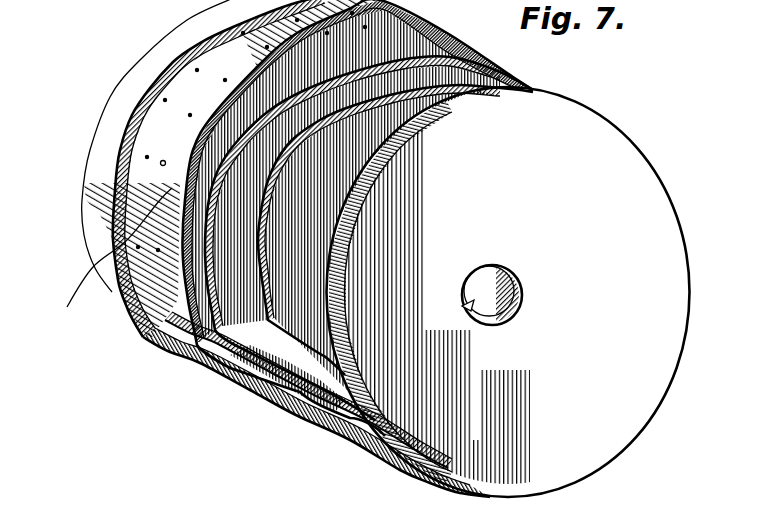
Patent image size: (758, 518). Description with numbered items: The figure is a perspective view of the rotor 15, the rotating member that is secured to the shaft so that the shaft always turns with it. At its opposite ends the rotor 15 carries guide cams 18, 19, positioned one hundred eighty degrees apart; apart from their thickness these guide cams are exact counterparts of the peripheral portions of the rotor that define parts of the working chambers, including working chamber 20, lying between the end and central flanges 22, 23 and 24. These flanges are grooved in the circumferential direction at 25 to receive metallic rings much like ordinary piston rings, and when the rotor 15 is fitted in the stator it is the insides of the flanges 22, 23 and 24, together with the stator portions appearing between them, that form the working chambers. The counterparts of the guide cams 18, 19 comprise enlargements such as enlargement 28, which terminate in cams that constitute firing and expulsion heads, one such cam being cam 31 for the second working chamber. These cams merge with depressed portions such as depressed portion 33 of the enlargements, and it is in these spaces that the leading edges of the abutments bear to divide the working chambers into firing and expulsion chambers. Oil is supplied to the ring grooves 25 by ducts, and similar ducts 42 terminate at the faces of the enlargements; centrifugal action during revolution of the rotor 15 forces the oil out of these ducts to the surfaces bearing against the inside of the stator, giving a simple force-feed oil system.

The rotor 15 is at (279, 391).
The guide cam 18 is at (583, 182).
The guide cam 19 is at (100, 222).
The working chamber 20 is at (240, 195).
The end flange 22 is at (520, 106).
The central flange 23 is at (188, 345).
The end flange 24 is at (383, 68).
The ring groove 25 is at (128, 117).
The enlargement 28 is at (165, 100).
The cam 31 is at (176, 318).
The depressed portion 33 is at (262, 220).
The duct 42 is at (161, 163).